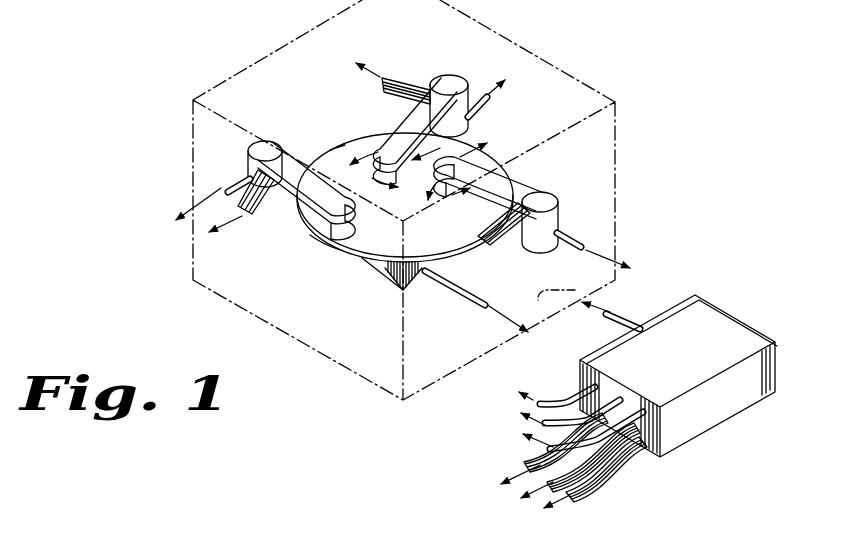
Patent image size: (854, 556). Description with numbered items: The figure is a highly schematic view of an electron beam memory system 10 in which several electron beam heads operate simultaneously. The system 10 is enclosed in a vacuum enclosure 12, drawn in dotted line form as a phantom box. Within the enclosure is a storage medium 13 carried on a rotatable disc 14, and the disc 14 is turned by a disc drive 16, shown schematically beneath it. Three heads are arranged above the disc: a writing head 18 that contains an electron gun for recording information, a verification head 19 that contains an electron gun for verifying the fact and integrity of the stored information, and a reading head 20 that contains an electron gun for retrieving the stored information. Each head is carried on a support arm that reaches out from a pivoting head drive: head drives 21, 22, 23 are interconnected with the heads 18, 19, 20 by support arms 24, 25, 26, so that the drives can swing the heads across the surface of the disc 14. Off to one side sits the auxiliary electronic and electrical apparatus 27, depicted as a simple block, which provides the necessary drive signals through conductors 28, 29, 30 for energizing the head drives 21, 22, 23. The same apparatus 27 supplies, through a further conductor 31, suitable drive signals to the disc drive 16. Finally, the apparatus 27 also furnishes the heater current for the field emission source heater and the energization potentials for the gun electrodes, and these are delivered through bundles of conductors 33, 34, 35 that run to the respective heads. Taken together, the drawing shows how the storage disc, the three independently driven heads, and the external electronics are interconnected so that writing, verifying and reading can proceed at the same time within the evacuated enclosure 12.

The electron beam memory system 10 is at (604, 72).
The vacuum enclosure 12 is at (615, 127).
The storage medium 13 is at (378, 240).
The rotatable disc 14 is at (368, 252).
The disc drive 16 is at (392, 282).
The writing head 18 is at (325, 242).
The verification head 19 is at (352, 158).
The reading head 20 is at (435, 190).
The head drive 21 is at (248, 168).
The head drive 22 is at (474, 122).
The head drive 23 is at (545, 242).
The support arm 24 is at (300, 182).
The support arm 25 is at (407, 127).
The support arm 26 is at (510, 193).
The auxiliary electronic and electrical apparatus 27 is at (696, 356).
The conductor 28 is at (232, 184).
The conductor 29 is at (472, 100).
The conductor 30 is at (586, 233).
The conductor 31 is at (466, 300).
The bundle of conductors 33 is at (262, 208).
The bundle of conductors 34 is at (414, 88).
The bundle of conductors 35 is at (508, 236).